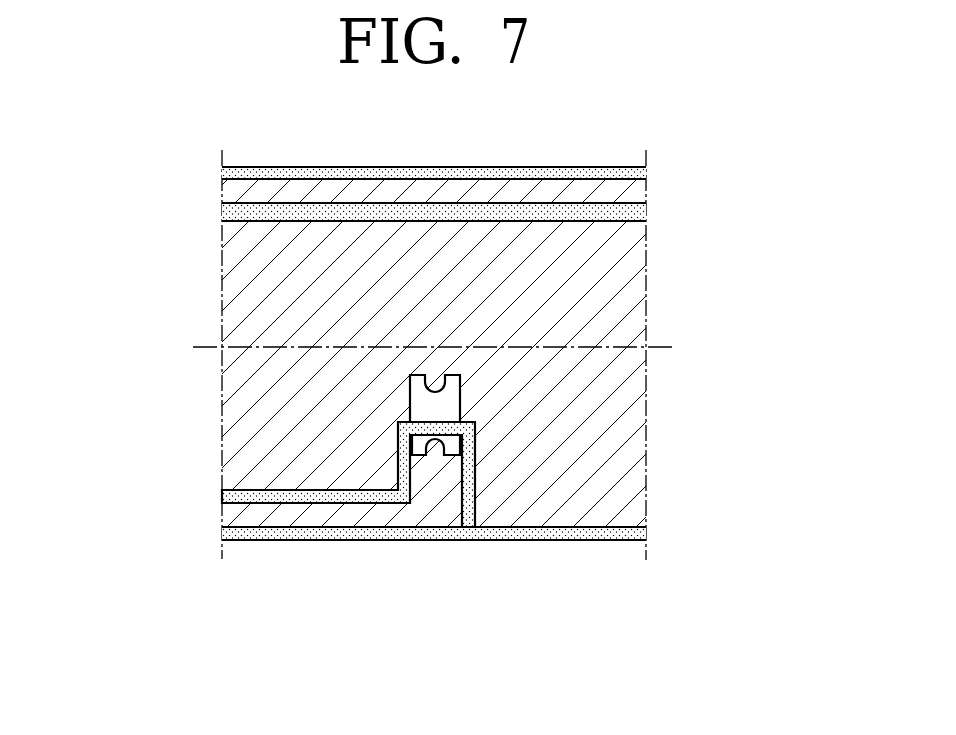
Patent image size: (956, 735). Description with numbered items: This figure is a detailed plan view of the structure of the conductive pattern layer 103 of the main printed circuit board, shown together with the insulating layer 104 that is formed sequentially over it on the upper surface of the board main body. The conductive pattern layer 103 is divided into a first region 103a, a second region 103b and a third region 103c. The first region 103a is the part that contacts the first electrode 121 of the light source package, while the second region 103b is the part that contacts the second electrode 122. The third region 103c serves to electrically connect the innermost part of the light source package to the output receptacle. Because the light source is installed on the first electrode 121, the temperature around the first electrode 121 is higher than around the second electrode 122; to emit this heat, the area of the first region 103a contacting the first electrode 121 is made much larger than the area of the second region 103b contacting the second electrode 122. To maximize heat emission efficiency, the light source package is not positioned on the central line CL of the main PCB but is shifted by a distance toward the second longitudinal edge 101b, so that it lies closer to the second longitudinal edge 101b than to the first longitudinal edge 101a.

The first longitudinal edge 101a is at (524, 165).
The second longitudinal edge 101b is at (525, 543).
The conductive pattern layer 103 is at (344, 355).
The first region 103a is at (228, 325).
The second region 103b is at (128, 195).
The third region 103c is at (228, 190).
The insulating layer 104 is at (641, 173).
The first electrode 121 is at (447, 407).
The second electrode 122 is at (452, 440).
The central line CL is at (612, 346).